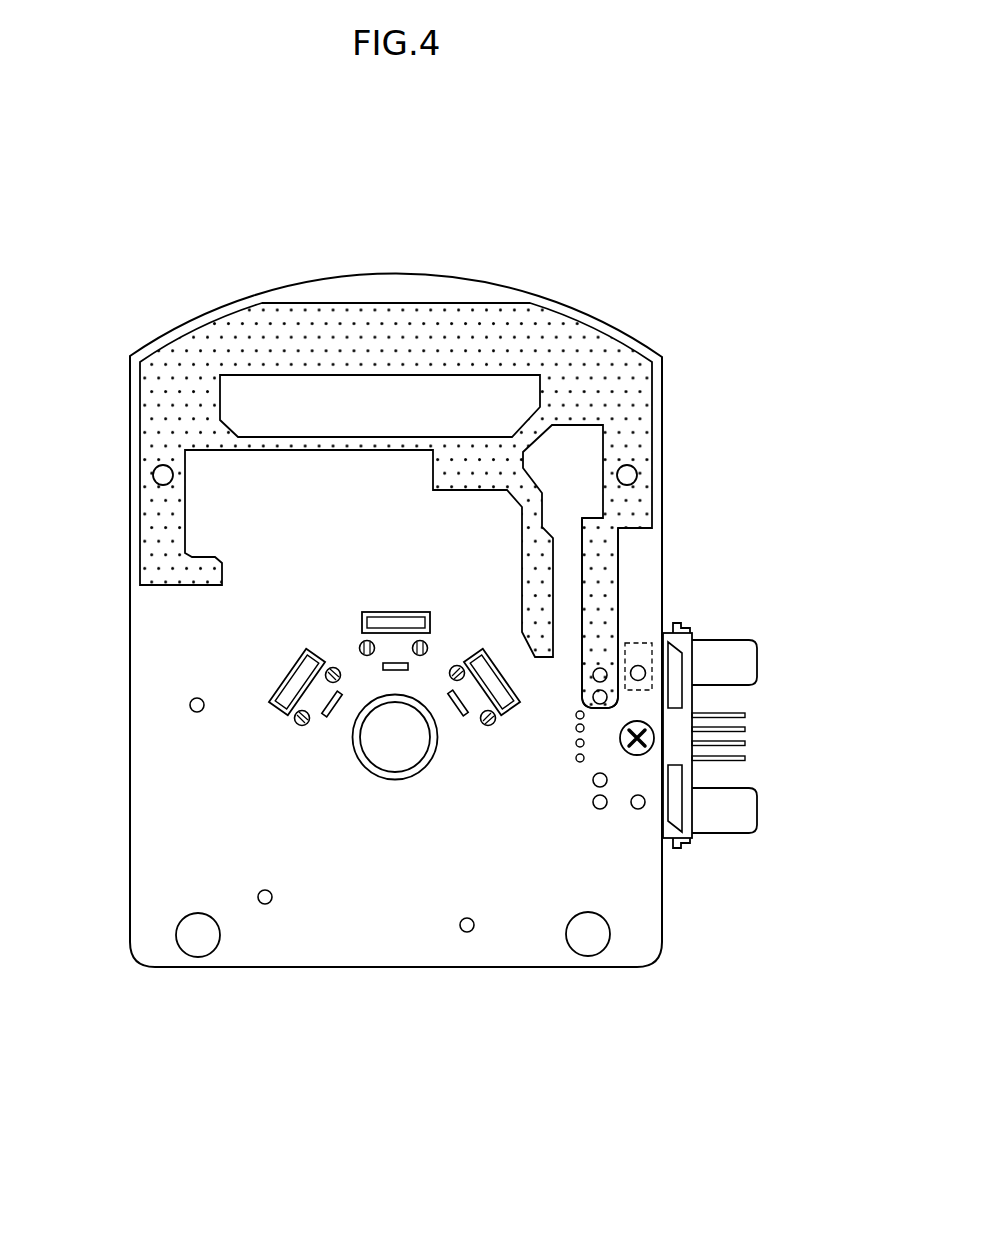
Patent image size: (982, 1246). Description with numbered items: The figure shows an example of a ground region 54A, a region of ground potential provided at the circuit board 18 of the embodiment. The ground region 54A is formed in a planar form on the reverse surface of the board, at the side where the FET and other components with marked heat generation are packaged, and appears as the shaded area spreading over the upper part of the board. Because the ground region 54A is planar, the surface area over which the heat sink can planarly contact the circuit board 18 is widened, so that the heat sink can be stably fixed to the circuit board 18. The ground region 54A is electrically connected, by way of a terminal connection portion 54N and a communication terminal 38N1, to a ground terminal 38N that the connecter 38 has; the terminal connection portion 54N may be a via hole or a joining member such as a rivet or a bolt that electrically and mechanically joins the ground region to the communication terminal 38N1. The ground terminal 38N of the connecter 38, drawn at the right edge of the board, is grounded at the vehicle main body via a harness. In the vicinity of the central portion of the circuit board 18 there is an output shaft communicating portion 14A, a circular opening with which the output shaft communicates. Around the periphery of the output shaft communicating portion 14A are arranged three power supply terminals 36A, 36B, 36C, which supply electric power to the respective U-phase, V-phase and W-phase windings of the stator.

The circuit board 18 is at (208, 967).
The ground region 54A is at (557, 336).
The terminal connection portion 54N is at (582, 685).
The output shaft communicating portion 14A is at (378, 776).
The power supply terminal 36A is at (503, 683).
The power supply terminal 36B is at (368, 630).
The power supply terminal 36C is at (282, 705).
The connecter 38 is at (743, 718).
The ground terminal 38N is at (757, 637).
The communication terminal 38N1 is at (627, 662).